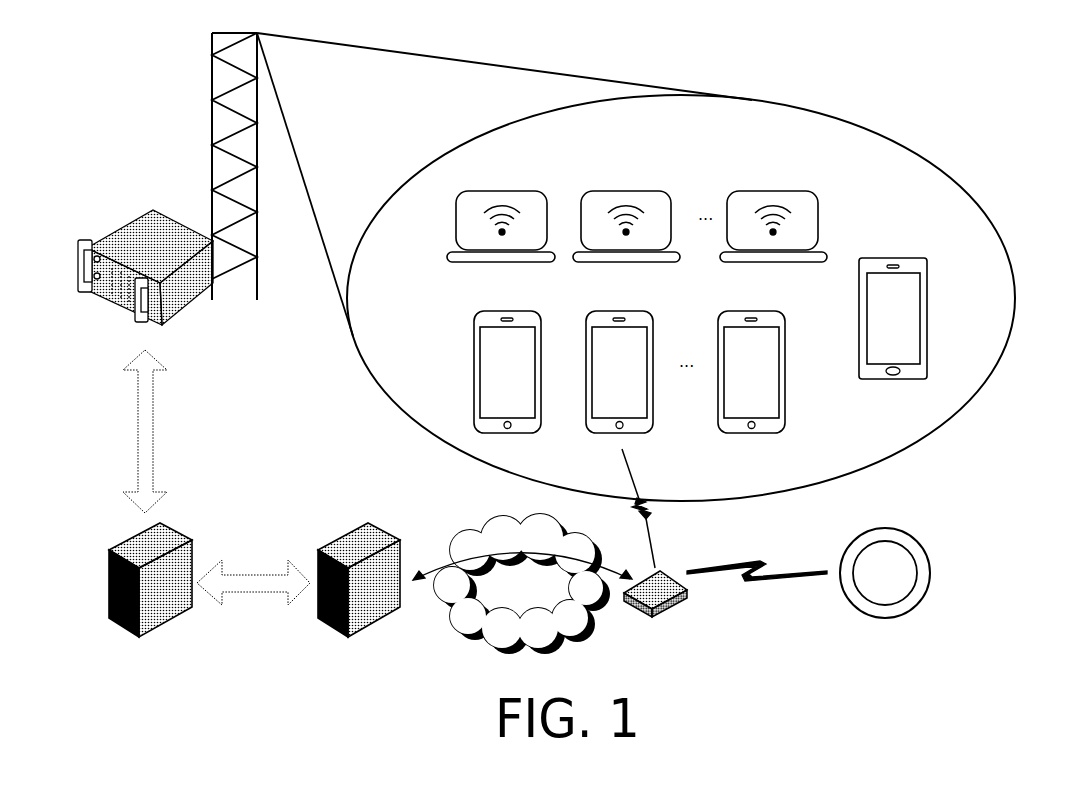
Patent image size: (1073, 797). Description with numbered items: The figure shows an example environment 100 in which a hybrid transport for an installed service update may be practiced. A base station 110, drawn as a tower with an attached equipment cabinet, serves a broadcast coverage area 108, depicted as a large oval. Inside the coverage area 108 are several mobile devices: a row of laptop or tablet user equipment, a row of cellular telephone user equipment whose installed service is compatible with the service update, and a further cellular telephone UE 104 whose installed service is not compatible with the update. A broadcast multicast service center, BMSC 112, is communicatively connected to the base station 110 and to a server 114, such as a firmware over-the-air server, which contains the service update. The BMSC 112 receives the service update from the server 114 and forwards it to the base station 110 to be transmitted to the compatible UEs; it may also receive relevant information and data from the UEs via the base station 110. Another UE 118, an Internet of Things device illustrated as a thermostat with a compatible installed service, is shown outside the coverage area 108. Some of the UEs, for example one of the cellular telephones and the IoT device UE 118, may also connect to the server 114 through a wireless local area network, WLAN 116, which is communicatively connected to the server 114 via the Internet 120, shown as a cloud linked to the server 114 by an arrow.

The environment 100 is at (928, 55).
The user equipment 104 is at (922, 252).
The broadcast coverage area 108 is at (895, 125).
The base station 110 is at (182, 209).
The broadcast multicast service center 112 is at (200, 661).
The server 114 is at (413, 661).
The wireless local area network 116 is at (718, 643).
The user equipment 118 is at (915, 516).
The Internet 120 is at (535, 616).